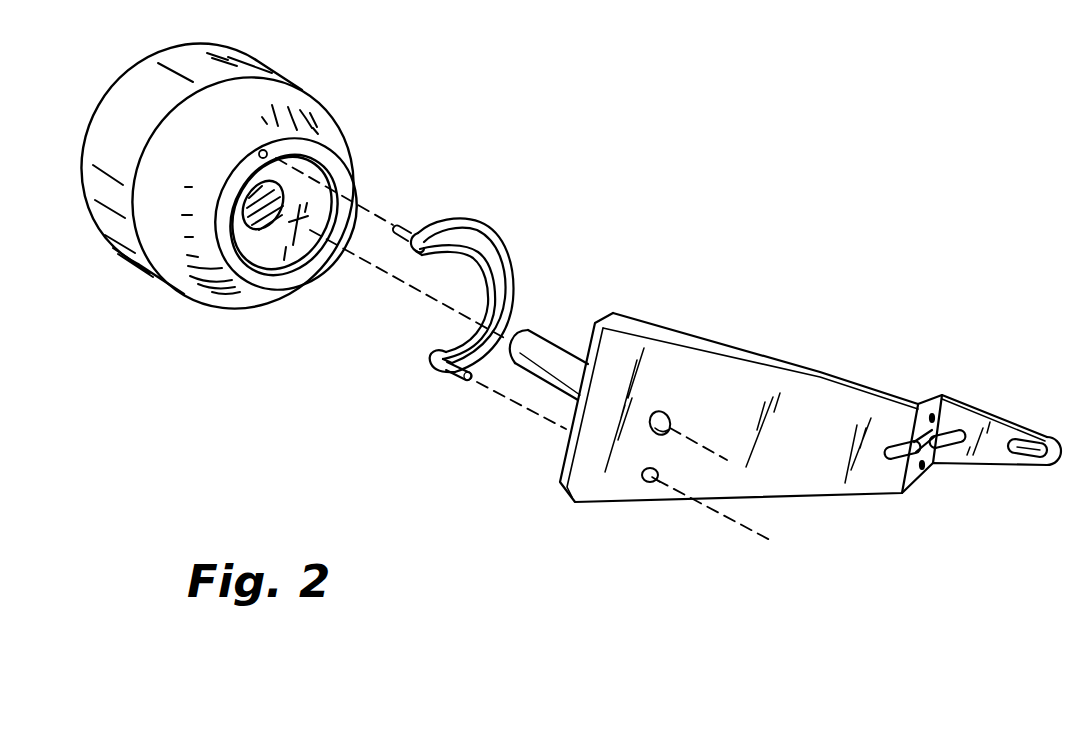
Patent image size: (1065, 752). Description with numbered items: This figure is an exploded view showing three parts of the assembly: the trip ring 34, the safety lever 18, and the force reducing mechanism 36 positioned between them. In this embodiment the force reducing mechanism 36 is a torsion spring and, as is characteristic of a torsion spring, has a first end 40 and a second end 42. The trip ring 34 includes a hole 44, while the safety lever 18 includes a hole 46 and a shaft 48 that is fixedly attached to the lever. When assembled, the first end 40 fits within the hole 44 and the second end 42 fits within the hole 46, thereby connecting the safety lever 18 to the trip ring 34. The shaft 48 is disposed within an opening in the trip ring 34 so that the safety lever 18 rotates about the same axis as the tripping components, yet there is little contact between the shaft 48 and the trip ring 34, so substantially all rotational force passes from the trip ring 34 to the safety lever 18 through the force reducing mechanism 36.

The safety lever 18 is at (775, 486).
The trip ring 34 is at (100, 286).
The force reducing mechanism 36 is at (516, 217).
The first end 40 is at (404, 226).
The second end 42 is at (472, 384).
The hole 44 is at (267, 150).
The hole 46 is at (647, 484).
The shaft 48 is at (567, 343).